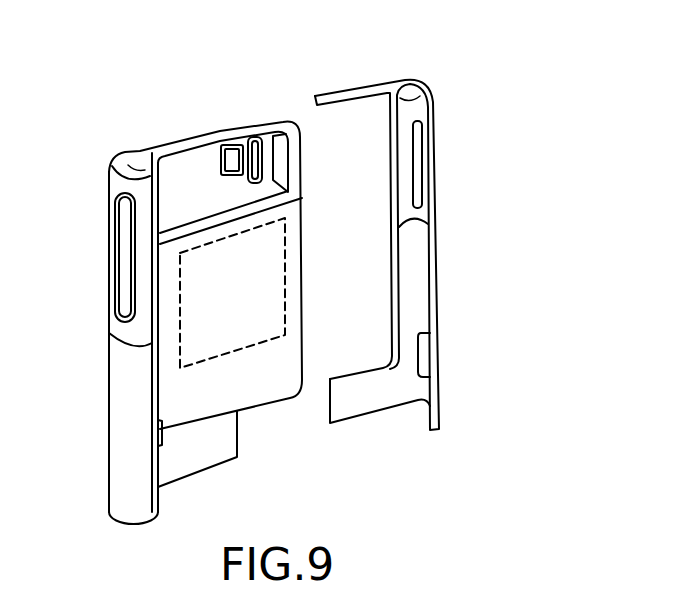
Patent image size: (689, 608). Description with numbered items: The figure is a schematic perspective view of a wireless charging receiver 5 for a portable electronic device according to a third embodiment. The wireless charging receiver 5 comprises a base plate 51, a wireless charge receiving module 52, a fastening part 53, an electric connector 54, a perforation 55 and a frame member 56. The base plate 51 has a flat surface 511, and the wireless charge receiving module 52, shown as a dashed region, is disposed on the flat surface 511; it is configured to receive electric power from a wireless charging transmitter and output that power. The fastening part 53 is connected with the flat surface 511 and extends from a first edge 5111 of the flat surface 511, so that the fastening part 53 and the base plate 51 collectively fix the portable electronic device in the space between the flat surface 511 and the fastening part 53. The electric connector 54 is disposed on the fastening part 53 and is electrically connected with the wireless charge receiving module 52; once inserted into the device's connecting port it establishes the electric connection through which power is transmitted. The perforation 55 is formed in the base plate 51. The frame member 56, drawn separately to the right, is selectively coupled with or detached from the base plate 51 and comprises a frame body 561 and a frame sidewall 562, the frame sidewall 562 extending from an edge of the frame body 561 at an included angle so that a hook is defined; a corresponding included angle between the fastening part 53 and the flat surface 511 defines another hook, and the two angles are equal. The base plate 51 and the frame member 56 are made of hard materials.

The wireless charging receiver 5 is at (124, 66).
The base plate 51 is at (264, 159).
The flat surface 511 is at (267, 386).
The first edge 5111 is at (173, 312).
The wireless charge receiving module 52 is at (276, 302).
The fastening part 53 is at (132, 412).
The electric connector 54 is at (163, 437).
The perforation 55 is at (231, 155).
The frame member 56 is at (366, 70).
The frame body 561 is at (369, 403).
The frame sidewall 562 is at (440, 253).